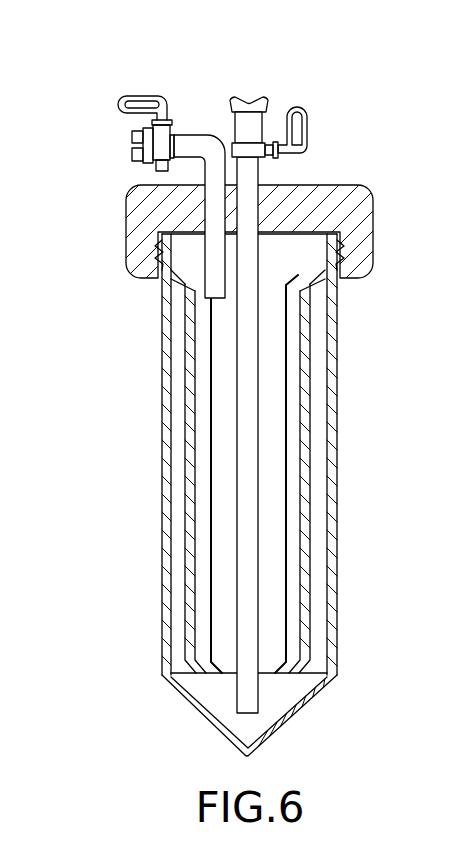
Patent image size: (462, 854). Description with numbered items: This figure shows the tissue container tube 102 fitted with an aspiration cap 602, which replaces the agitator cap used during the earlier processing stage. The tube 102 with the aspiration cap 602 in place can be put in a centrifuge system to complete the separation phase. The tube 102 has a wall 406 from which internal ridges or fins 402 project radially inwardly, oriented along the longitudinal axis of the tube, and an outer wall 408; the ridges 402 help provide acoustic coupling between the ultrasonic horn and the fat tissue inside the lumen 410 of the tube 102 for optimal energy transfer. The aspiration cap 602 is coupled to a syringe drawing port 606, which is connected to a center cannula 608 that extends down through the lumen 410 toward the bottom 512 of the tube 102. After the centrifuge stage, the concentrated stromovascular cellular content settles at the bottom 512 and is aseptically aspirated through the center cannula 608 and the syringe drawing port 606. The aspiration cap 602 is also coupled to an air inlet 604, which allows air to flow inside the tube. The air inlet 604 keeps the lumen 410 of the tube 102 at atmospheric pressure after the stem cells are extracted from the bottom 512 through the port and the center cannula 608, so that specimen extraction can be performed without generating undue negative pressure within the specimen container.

The tube 102 is at (136, 659).
The internal ridges or fins 402 is at (180, 355).
The wall 406 is at (170, 420).
The outer wall 408 is at (162, 487).
The lumen 410 is at (268, 577).
The bottom 512 is at (295, 718).
The aspiration cap 602 is at (360, 212).
The air inlet 604 is at (133, 95).
The syringe drawing port 606 is at (248, 98).
The center cannula 608 is at (258, 397).